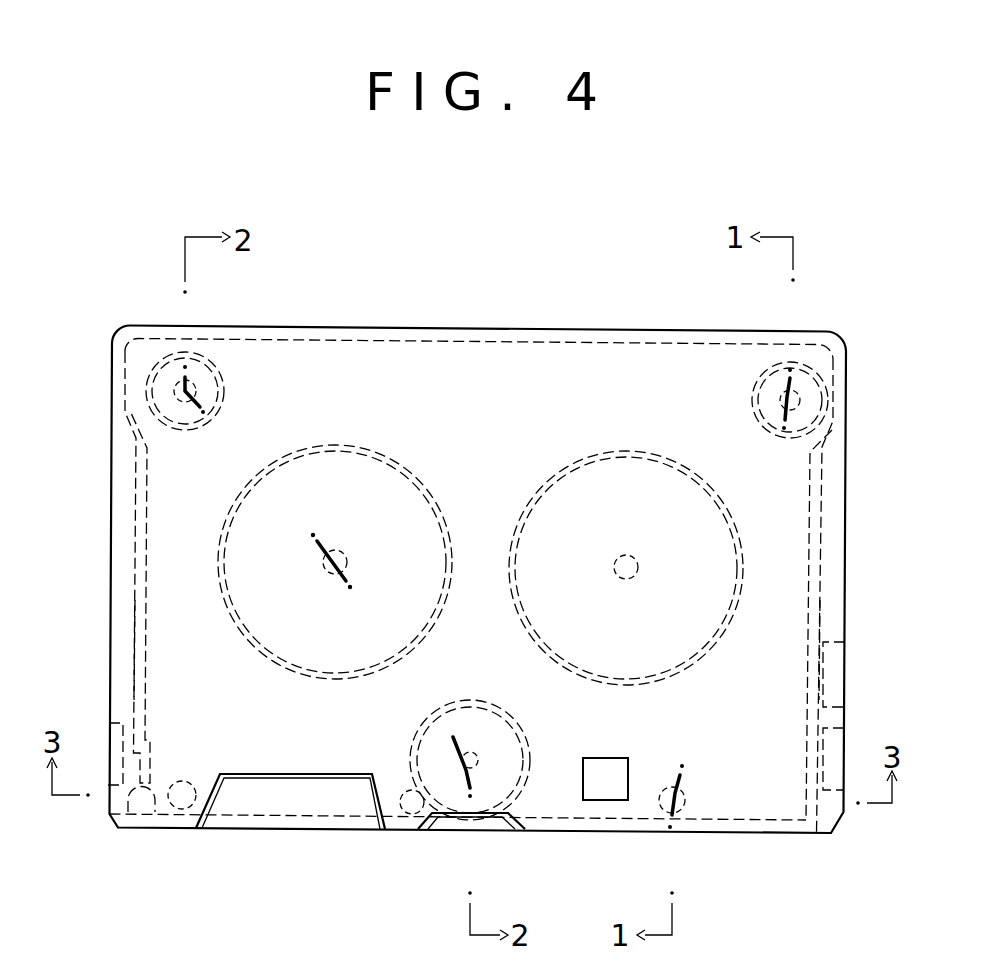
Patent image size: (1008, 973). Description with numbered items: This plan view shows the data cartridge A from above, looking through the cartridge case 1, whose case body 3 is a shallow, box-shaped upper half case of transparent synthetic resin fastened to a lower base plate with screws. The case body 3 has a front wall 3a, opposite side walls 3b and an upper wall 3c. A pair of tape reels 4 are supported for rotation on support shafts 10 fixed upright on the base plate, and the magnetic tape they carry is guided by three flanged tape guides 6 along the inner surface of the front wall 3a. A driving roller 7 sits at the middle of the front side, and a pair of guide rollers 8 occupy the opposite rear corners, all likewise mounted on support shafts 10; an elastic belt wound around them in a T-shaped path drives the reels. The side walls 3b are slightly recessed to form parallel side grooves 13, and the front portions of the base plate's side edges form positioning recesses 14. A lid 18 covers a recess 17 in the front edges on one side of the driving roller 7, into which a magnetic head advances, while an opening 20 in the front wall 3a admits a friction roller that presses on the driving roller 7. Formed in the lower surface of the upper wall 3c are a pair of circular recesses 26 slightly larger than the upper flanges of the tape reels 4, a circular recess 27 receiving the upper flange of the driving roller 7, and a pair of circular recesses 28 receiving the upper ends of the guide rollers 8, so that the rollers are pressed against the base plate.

The tape cassette A is at (605, 252).
The cartridge case 1 is at (458, 322).
The case body 3 is at (393, 358).
The front wall 3a is at (582, 818).
The side walls 3b is at (134, 512).
The upper wall 3c is at (517, 372).
The tape reels 4 is at (330, 460).
The flanged tape guides 6 is at (184, 808).
The driving roller 7 is at (462, 722).
The guide rollers 8 is at (180, 385).
The support shafts 10 is at (197, 385).
The side grooves 13 is at (126, 589).
The positioning recesses 14 is at (119, 722).
The recess 17 is at (262, 785).
The lid 18 is at (270, 822).
The opening 20 is at (448, 824).
The circular recesses 26 is at (394, 452).
The circular recess 27 is at (524, 736).
The circular recesses 28 is at (213, 364).